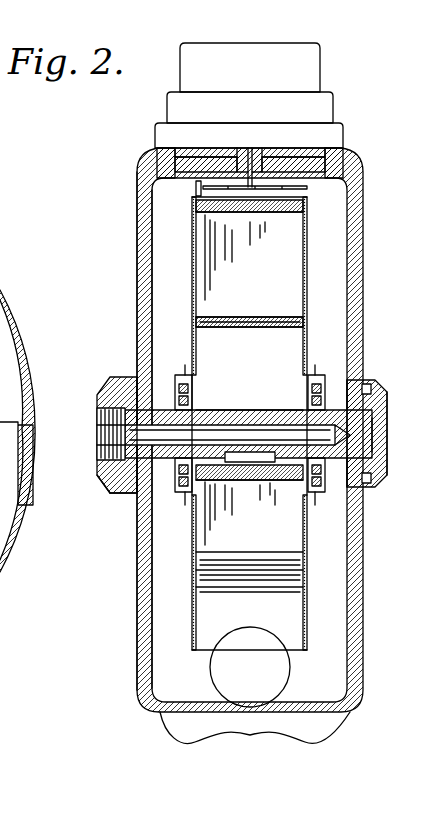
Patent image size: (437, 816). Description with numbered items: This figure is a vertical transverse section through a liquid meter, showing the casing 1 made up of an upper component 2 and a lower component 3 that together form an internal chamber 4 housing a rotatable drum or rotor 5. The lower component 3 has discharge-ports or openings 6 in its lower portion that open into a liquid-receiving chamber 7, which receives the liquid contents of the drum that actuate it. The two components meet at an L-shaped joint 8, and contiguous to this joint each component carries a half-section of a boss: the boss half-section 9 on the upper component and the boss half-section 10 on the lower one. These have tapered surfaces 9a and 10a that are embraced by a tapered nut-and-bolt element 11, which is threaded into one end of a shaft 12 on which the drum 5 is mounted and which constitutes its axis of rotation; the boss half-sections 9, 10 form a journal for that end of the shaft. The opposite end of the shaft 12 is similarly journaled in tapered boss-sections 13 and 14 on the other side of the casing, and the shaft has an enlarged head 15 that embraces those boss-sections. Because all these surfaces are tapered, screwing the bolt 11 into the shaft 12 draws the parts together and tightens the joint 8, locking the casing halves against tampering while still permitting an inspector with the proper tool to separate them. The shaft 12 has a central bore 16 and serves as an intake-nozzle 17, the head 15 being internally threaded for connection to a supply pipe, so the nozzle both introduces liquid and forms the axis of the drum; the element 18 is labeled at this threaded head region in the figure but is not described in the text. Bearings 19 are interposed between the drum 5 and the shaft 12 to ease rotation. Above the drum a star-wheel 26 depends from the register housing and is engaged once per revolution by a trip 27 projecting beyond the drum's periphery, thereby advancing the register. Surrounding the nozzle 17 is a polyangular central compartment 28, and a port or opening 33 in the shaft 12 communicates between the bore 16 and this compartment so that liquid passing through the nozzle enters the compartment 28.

The casing 1 is at (263, 430).
The upper component 2 is at (365, 223).
The lower component 3 is at (365, 565).
The internal chamber 4 is at (260, 423).
The rotatable drum or rotor 5 is at (249, 305).
The discharge-ports 6 is at (0, 660).
The liquid-receiving chamber 7 is at (255, 708).
The joint 8 is at (40, 428).
The boss half-section 9 is at (386, 396).
The tapered surface 9a is at (370, 388).
The boss half-section 10 is at (388, 452).
The tapered surface 10a is at (372, 478).
The tapered nut-and-bolt element 11 is at (390, 422).
The shaft 12 is at (240, 410).
The tapered boss-section 13 is at (133, 392).
The tapered boss-section 14 is at (121, 493).
The enlarged head 15 is at (106, 484).
The bore 16 is at (208, 428).
The intake-nozzle 17 is at (100, 426).
The stud 18 is at (100, 443).
The bearings 19 is at (318, 375).
The star-wheel 26 is at (307, 188).
The trip 27 is at (196, 188).
The central compartment 28 is at (249, 332).
The port or opening 33 is at (255, 452).